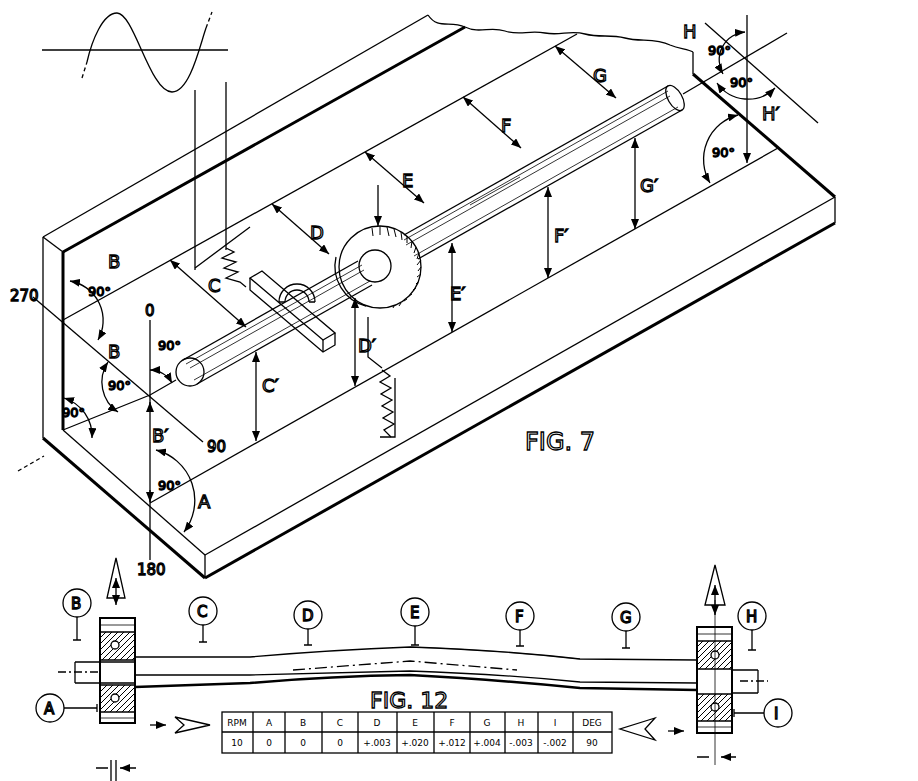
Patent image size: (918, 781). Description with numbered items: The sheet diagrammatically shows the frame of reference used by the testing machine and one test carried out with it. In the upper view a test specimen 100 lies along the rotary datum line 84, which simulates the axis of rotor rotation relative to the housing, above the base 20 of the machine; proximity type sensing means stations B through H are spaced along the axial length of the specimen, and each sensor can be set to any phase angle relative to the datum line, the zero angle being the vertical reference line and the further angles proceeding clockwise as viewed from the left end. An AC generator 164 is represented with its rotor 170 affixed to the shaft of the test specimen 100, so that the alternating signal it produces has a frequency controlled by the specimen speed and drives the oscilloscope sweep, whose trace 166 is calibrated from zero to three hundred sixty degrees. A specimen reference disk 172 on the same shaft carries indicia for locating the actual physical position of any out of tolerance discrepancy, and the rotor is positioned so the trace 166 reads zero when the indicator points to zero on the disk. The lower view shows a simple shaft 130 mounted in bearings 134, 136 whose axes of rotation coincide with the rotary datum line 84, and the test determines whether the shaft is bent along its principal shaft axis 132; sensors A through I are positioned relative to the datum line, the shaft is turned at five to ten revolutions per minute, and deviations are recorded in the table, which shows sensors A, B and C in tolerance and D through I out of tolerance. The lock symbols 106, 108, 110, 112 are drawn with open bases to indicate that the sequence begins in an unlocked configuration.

In FIG. 7, the base 20 is at (412, 466).
In FIG. 7, the rotary datum line 84 is at (788, 47).
In FIG. 12, the rotary datum line 84 is at (232, 668).
In FIG. 7, the test specimen 100 is at (470, 205).
In FIG. 7, the AC generator 164 is at (375, 425).
In FIG. 7, the trace 166 is at (100, 20).
In FIG. 7, the rotor 170 is at (327, 347).
In FIG. 7, the specimen reference disk 172 is at (393, 305).
In FIG. 12, the lock symbol 106 is at (108, 569).
In FIG. 12, the lock symbol 108 is at (720, 583).
In FIG. 12, the lock symbol 110 is at (192, 730).
In FIG. 12, the lock symbol 112 is at (636, 740).
In FIG. 12, the shaft 130 is at (555, 657).
In FIG. 12, the principal shaft axis 132 is at (452, 650).
In FIG. 12, the bearing 134 is at (99, 637).
In FIG. 12, the bearing 136 is at (734, 646).